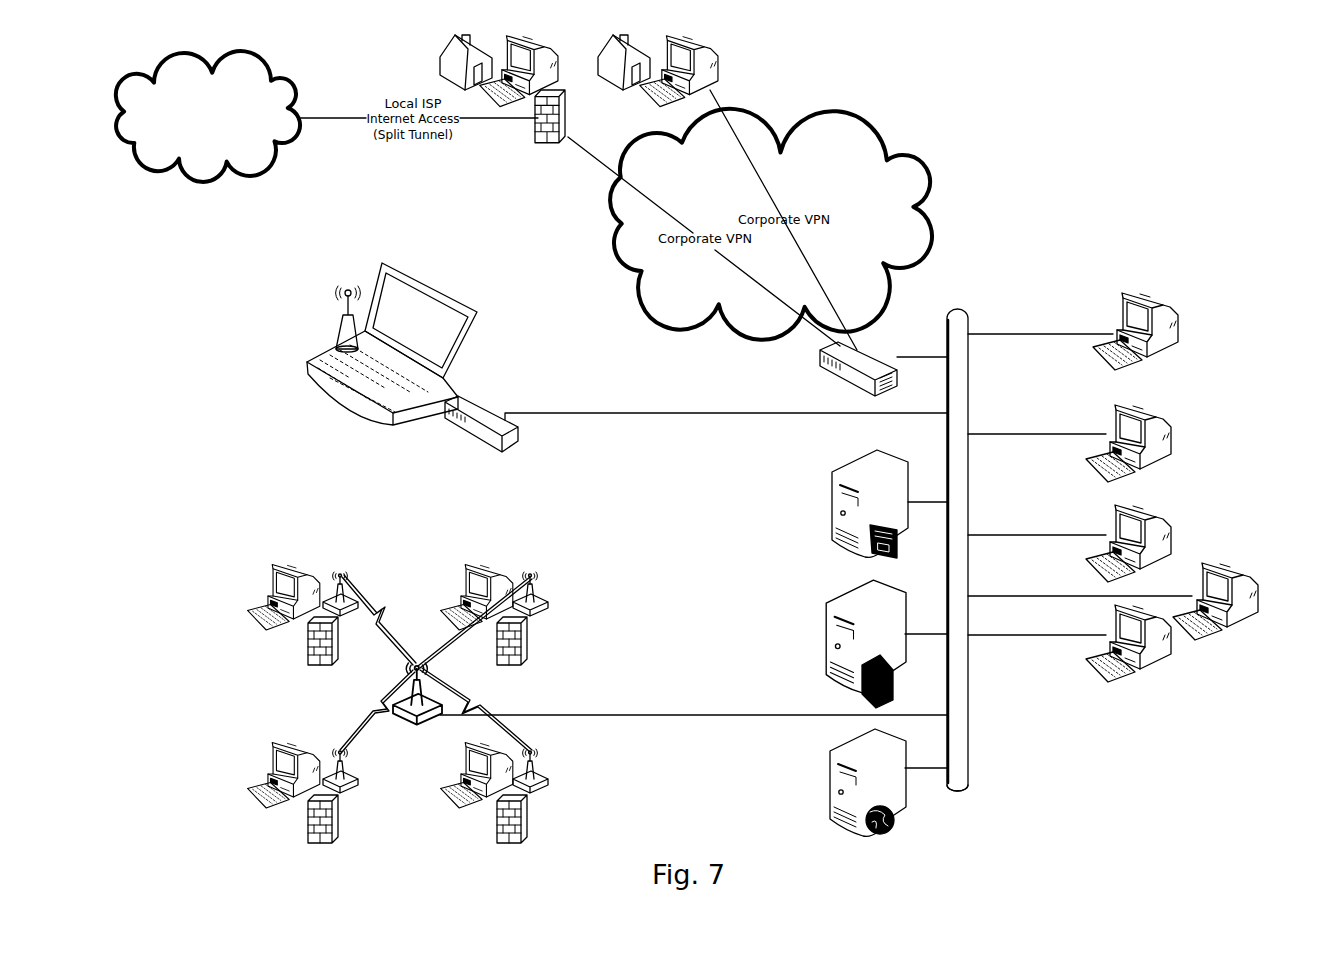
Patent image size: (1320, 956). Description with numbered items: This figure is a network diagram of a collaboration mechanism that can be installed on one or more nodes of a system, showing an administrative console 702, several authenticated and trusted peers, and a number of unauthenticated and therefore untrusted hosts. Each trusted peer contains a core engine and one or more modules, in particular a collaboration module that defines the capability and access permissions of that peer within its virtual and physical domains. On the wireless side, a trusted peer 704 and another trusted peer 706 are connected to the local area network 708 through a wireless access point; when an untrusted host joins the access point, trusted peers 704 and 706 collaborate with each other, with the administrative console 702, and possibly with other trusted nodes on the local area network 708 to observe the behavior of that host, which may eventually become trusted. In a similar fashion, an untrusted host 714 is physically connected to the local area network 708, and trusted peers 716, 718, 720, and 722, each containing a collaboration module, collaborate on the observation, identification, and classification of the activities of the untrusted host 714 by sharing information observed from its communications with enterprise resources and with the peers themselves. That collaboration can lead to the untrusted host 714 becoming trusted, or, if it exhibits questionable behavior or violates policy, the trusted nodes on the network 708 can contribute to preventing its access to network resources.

The administrative console 702 is at (433, 283).
The trusted peer 704 is at (270, 578).
The trusted peer 706 is at (281, 742).
The local area network 708 is at (955, 306).
The untrusted host 714 is at (1143, 291).
The trusted peer 716 is at (1158, 406).
The trusted peer 718 is at (1158, 506).
The trusted peer 720 is at (1240, 626).
The trusted peer 722 is at (415, 732).